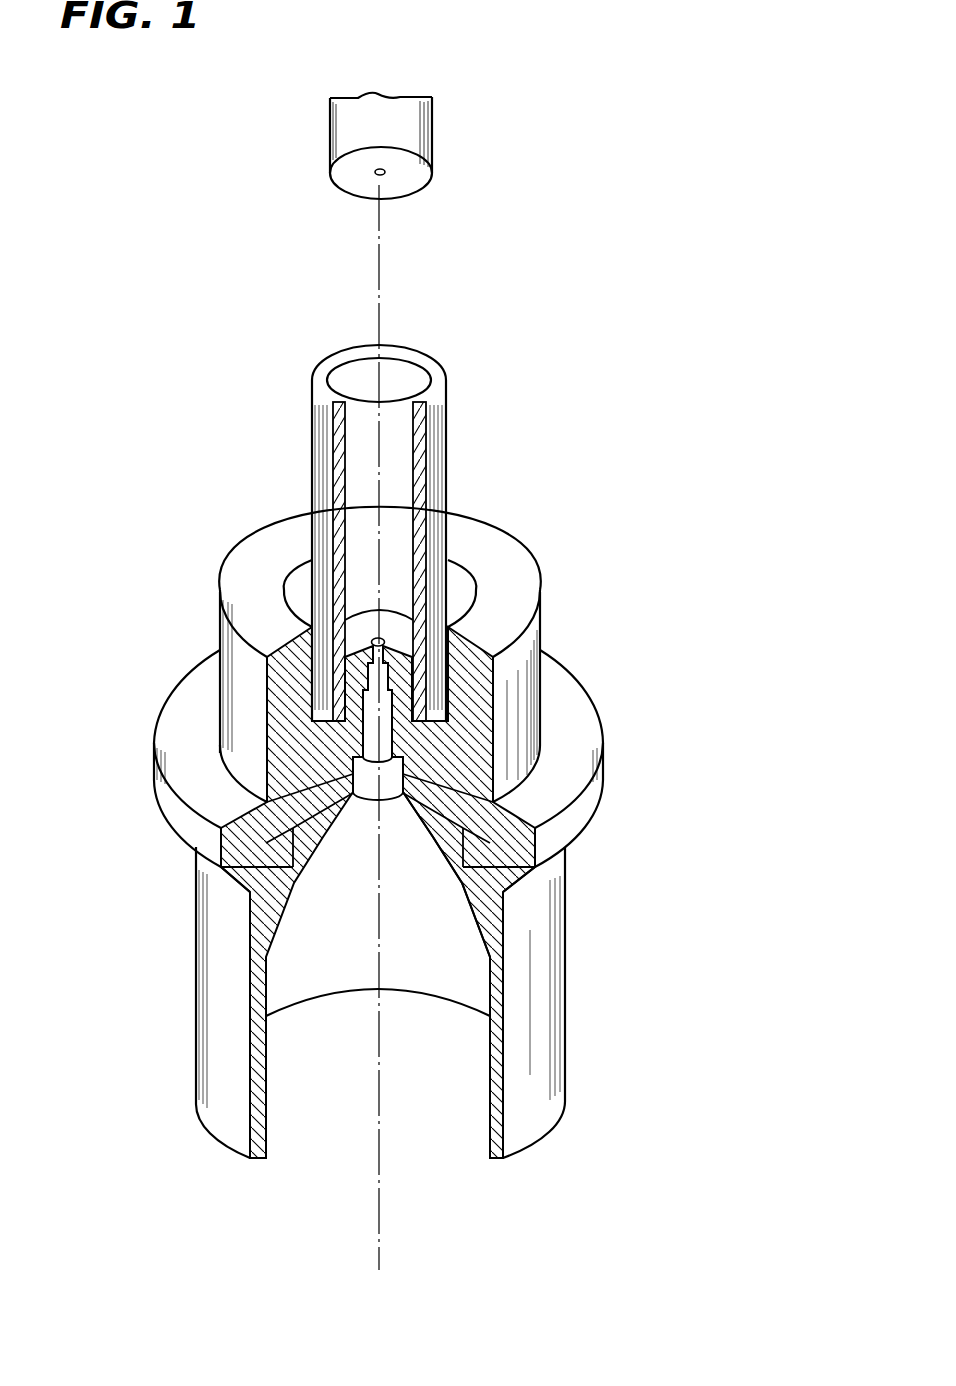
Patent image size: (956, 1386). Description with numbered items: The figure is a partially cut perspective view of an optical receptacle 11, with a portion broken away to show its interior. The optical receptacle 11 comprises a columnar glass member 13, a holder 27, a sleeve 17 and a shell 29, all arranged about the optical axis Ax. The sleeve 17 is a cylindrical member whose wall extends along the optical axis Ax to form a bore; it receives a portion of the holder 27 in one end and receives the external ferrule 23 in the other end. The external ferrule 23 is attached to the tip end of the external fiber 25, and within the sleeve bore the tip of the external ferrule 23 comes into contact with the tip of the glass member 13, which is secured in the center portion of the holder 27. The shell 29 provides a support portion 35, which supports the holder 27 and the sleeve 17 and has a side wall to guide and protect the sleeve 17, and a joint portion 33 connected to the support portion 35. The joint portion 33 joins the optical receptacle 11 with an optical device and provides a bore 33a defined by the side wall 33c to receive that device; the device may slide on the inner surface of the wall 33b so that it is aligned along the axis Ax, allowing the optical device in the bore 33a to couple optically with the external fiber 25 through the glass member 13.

The optical receptacle 11 is at (633, 430).
The glass member 13 is at (345, 627).
The sleeve 17 is at (446, 490).
The external ferrule 23 is at (435, 118).
The external fiber 25 is at (386, 174).
The holder 27 is at (407, 673).
The shell 29 is at (59, 646).
The joint portion 33 is at (133, 736).
The bore 33a is at (341, 942).
The wall 33b is at (543, 1130).
The side wall 33c is at (500, 975).
The support portion 35 is at (133, 588).
The optical axis Ax is at (376, 280).